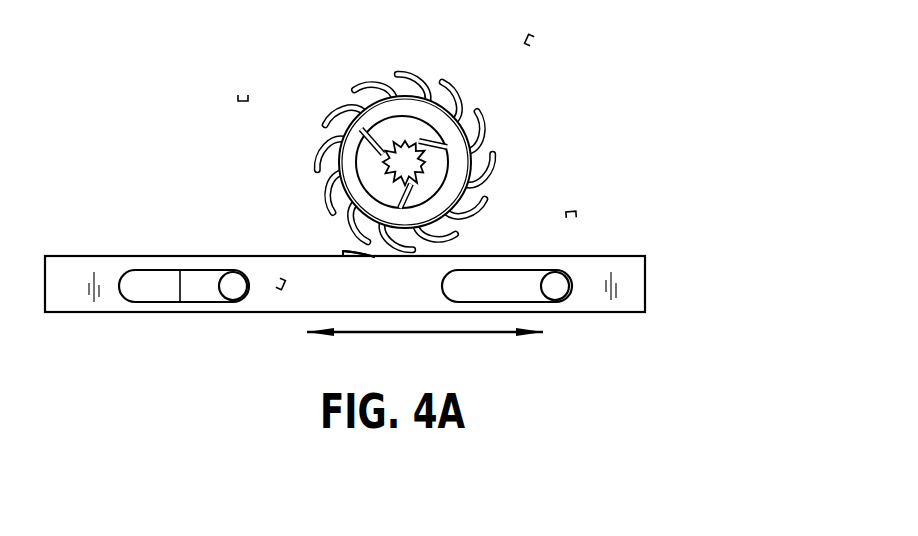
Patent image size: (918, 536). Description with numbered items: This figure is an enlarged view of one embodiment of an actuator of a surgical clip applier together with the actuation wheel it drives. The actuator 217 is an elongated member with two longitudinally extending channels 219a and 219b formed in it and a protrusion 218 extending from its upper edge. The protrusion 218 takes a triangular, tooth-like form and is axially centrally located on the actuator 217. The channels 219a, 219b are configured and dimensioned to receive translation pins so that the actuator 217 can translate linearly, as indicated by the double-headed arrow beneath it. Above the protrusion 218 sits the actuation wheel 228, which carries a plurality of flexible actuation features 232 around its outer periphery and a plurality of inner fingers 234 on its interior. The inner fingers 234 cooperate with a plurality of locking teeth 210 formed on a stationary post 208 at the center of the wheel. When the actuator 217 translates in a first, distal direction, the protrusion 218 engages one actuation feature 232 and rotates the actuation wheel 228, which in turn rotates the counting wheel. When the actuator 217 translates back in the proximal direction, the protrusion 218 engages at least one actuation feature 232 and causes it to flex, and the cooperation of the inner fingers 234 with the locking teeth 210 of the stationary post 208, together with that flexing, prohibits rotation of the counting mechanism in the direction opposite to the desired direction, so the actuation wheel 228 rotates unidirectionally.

The stationary post 208 is at (383, 157).
The locking teeth 210 is at (398, 183).
The actuator 217 is at (58, 312).
The protrusion 218 is at (346, 252).
The channel 219a is at (152, 302).
The channel 219b is at (538, 302).
The actuation wheel 228 is at (350, 78).
The actuation feature 232 is at (441, 81).
The inner fingers 234 is at (436, 144).